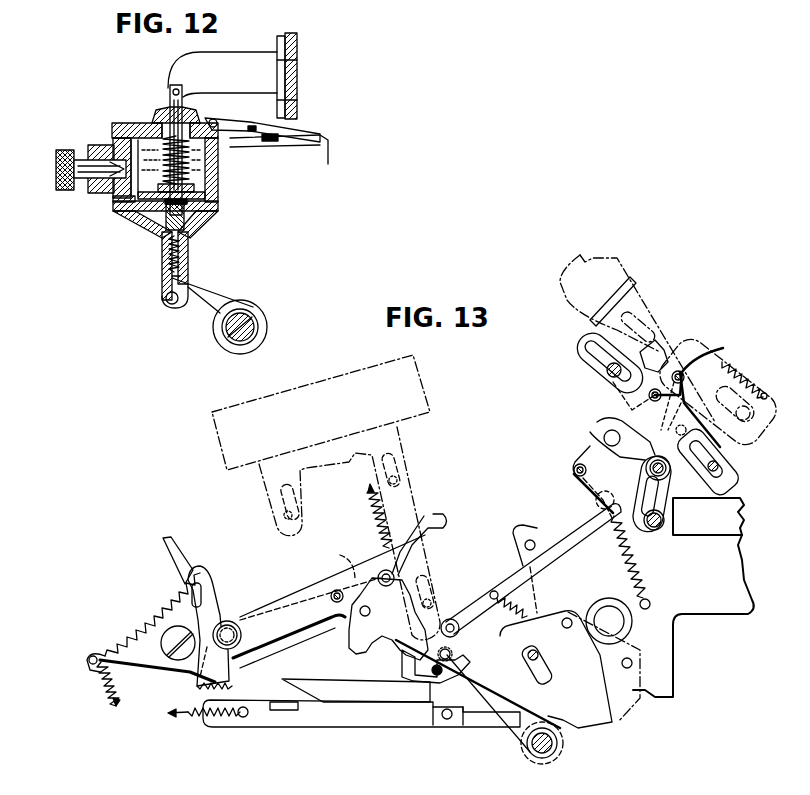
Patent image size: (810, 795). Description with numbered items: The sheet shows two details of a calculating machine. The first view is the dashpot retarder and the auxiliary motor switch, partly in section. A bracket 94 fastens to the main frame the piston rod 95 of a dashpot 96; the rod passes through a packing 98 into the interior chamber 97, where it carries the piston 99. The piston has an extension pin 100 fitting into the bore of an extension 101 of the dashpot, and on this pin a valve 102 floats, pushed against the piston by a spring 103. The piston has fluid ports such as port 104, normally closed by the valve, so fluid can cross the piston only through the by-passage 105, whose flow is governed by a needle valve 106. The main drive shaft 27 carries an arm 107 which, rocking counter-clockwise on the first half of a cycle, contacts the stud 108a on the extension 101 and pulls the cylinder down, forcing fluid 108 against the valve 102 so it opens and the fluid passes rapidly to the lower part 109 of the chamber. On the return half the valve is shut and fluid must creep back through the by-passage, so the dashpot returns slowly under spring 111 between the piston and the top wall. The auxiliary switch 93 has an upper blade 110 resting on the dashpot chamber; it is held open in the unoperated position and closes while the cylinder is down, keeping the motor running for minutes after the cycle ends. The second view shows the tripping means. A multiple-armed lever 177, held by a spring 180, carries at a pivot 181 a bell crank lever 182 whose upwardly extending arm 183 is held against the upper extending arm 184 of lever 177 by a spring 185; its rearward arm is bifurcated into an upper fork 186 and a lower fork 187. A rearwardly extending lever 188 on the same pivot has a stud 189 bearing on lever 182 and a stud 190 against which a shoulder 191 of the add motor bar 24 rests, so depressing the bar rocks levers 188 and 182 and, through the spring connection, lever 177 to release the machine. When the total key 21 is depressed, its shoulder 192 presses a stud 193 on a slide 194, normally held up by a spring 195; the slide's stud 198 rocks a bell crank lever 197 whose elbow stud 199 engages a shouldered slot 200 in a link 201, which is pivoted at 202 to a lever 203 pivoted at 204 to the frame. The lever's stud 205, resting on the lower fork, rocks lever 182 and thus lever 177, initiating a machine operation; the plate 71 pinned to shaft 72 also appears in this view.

In FIG. 13, the total key 21 is at (617, 275).
In FIG. 13, the add motor bar 24 is at (212, 438).
In FIG. 12, the main drive shaft 27 is at (252, 324).
In FIG. 13, the plate 71 is at (664, 647).
In FIG. 13, the shaft 72 is at (602, 616).
In FIG. 12, the auxiliary switch 93 is at (276, 142).
In FIG. 12, the bracket 94 is at (221, 64).
In FIG. 12, the piston rod 95 is at (170, 87).
In FIG. 12, the dashpot 96 is at (216, 212).
In FIG. 12, the interior chamber 97 is at (203, 156).
In FIG. 12, the packing 98 is at (161, 109).
In FIG. 12, the piston 99 is at (216, 196).
In FIG. 12, the extension pin 100 is at (188, 258).
In FIG. 12, the extension 101 is at (162, 280).
In FIG. 12, the valve 102 is at (164, 232).
In FIG. 12, the spring 103 is at (165, 254).
In FIG. 12, the port 104 is at (130, 212).
In FIG. 12, the by-passage 105 is at (127, 147).
In FIG. 12, the needle valve 106 is at (83, 182).
In FIG. 12, the arm 107 is at (219, 300).
In FIG. 12, the fluid 108 is at (146, 137).
In FIG. 12, the stud 108a is at (170, 305).
In FIG. 12, the lower part of the chamber 109 is at (196, 214).
In FIG. 12, the upper blade 110 is at (213, 121).
In FIG. 12, the spring 111 is at (212, 181).
In FIG. 13, the multiple-armed lever 177 is at (193, 672).
In FIG. 13, the spring 180 is at (112, 705).
In FIG. 13, the pivot 181 is at (232, 622).
In FIG. 13, the bell crank lever 182 is at (318, 630).
In FIG. 13, the upwardly extending arm 183 is at (208, 583).
In FIG. 13, the upper extending arm 184 is at (163, 550).
In FIG. 13, the spring 185 is at (147, 605).
In FIG. 13, the upper fork 186 is at (430, 517).
In FIG. 13, the lower fork 187 is at (413, 686).
In FIG. 13, the rearwardly extending lever 188 is at (286, 600).
In FIG. 13, the stud 189 is at (337, 590).
In FIG. 13, the stud 190 is at (392, 576).
In FIG. 13, the shoulder 191 is at (331, 560).
In FIG. 13, the shoulder 192 is at (649, 396).
In FIG. 13, the stud 193 is at (712, 377).
In FIG. 13, the slide 194 is at (733, 460).
In FIG. 13, the spring 195 is at (740, 441).
In FIG. 13, the bell crank lever 197 is at (607, 463).
In FIG. 13, the stud 198 is at (680, 370).
In FIG. 13, the stud 199 is at (672, 488).
In FIG. 13, the shouldered slot 200 is at (668, 496).
In FIG. 13, the link 201 is at (558, 548).
In FIG. 13, the pivot 202 is at (447, 603).
In FIG. 13, the lever 203 is at (428, 704).
In FIG. 13, the pivot stud 204 is at (558, 747).
In FIG. 13, the stud 205 is at (432, 670).